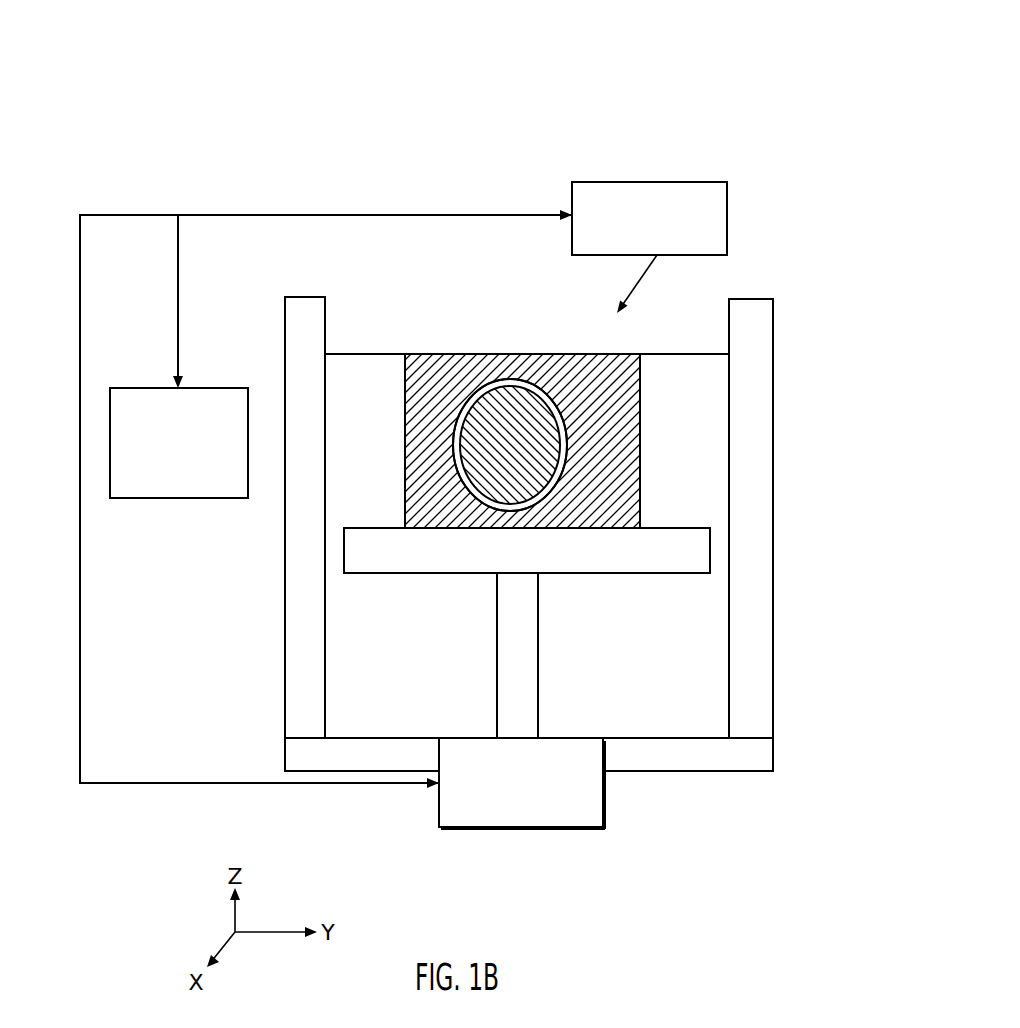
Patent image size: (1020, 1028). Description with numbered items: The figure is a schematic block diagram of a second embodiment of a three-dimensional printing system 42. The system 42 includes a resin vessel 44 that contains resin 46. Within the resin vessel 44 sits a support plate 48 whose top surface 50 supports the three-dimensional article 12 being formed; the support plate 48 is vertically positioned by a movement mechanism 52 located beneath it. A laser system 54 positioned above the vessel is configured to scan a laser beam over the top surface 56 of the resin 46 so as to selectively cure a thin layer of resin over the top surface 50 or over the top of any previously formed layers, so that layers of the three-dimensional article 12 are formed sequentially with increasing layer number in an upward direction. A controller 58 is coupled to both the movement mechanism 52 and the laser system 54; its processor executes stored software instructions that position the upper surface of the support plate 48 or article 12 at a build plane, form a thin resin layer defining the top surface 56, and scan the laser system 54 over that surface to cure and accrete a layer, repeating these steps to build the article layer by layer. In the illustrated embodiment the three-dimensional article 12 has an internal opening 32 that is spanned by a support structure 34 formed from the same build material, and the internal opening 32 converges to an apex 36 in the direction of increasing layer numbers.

The three dimensional printing system 42 is at (582, 83).
The laser system 54 is at (660, 182).
The controller 58 is at (222, 388).
The resin vessel 44 is at (746, 316).
The resin 46 is at (348, 370).
The three-dimensional article 12 is at (432, 352).
The top surface of the resin 56 is at (483, 352).
The internal opening 32 is at (455, 432).
The apex 36 is at (535, 372).
The support structure 34 is at (537, 422).
The support plate 48 is at (678, 528).
The top surface of the support plate 50 is at (375, 528).
The movement mechanism 52 is at (512, 828).